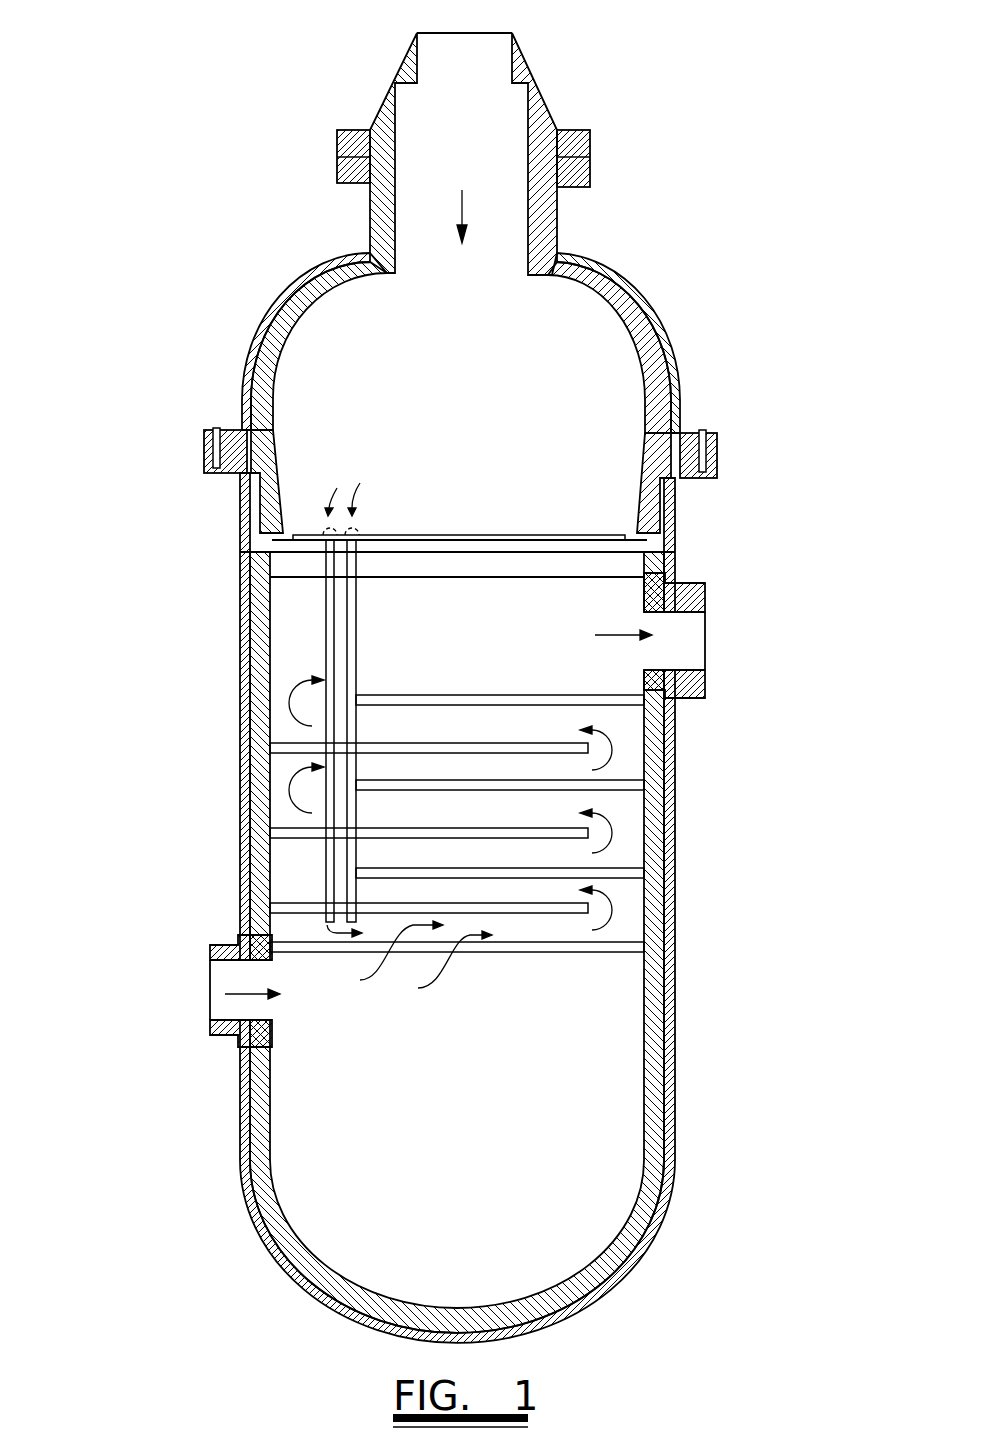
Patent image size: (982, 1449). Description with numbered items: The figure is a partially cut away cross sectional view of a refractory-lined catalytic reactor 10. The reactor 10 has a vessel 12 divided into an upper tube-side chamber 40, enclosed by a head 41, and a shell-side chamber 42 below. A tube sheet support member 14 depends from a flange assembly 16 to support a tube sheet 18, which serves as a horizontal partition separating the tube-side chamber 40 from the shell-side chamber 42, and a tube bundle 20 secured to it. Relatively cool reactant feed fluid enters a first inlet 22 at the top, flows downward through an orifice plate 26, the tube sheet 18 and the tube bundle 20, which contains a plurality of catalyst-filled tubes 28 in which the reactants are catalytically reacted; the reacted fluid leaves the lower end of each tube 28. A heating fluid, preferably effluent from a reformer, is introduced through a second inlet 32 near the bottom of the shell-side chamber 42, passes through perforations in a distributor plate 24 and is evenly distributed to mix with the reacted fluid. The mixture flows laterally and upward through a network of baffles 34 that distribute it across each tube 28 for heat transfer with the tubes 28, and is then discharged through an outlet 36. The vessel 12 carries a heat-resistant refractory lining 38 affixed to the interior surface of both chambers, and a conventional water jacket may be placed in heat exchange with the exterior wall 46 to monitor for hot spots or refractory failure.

The refractory-lined catalytic reactor 10 is at (162, 274).
The vessel 12 is at (242, 550).
The tube sheet support member 14 is at (287, 510).
The flange assembly 16 is at (205, 450).
The tube sheet 18 is at (473, 552).
The tube bundle 20 is at (316, 652).
The first inlet 22 is at (437, 32).
The distributor plate 24 is at (494, 957).
The orifice plate 26 is at (493, 537).
The catalyst-filled tubes 28 is at (357, 608).
The second inlet 32 is at (208, 1003).
The baffles 34 is at (551, 922).
The outlet 36 is at (703, 658).
The refractory lining 38 is at (653, 393).
The tube-side chamber 40 is at (497, 391).
The head 41 is at (623, 293).
The shell-side chamber 42 is at (507, 675).
The exterior wall 46 is at (675, 1008).